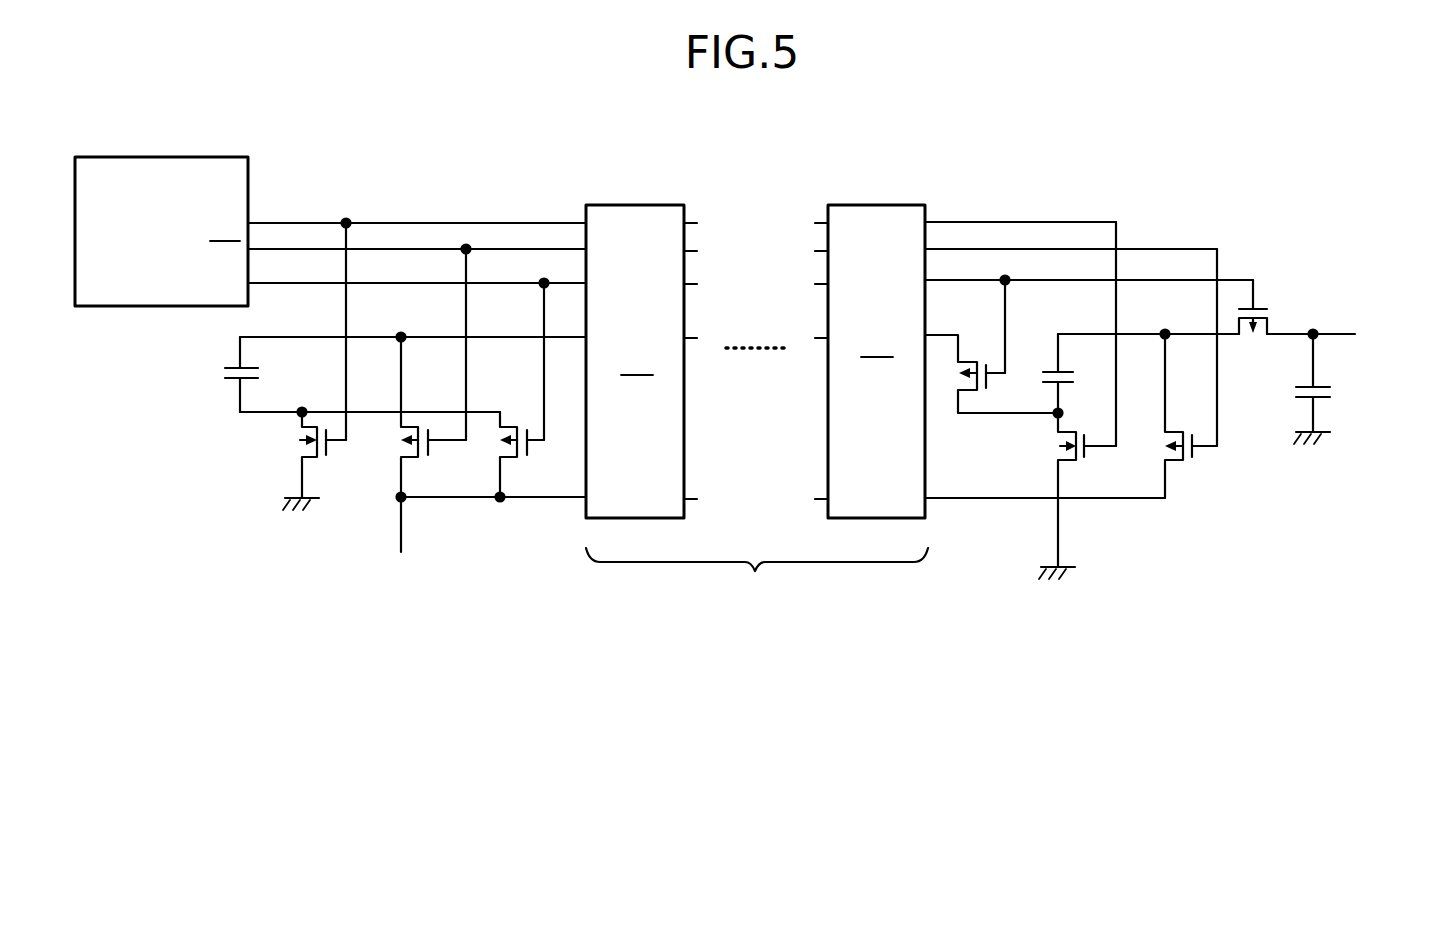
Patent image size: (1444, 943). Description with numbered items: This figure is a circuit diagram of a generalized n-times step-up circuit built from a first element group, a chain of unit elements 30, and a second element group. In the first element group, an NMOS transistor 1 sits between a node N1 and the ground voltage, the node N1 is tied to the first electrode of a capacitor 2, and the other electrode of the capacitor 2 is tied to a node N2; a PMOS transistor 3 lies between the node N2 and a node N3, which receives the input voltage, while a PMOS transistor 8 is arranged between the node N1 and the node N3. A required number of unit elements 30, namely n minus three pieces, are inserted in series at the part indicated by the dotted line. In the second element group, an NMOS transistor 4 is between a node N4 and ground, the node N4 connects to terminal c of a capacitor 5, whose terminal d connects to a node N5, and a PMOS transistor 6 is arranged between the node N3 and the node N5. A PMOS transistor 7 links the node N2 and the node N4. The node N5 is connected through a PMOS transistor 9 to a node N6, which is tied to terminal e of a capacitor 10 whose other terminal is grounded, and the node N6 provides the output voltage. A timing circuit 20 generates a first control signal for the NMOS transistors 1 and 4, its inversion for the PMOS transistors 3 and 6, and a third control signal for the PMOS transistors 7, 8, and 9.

The NMOS transistor 1 is at (298, 446).
The capacitor 2 is at (222, 373).
The PMOS transistor 3 is at (420, 460).
The NMOS transistor 4 is at (1084, 462).
The capacitor 5 is at (1076, 378).
The PMOS transistor 6 is at (1195, 462).
The PMOS transistor 7 is at (974, 360).
The PMOS transistor 8 is at (522, 460).
The PMOS transistor 9 is at (1272, 308).
The capacitor 10 is at (1333, 394).
The timing circuit 20 is at (233, 156).
The unit element 30 is at (757, 409).
The node N1 is at (302, 410).
The node N2 is at (402, 335).
The node N3 is at (399, 499).
The node N4 is at (1055, 418).
The node N5 is at (1165, 332).
The node N6 is at (1315, 332).